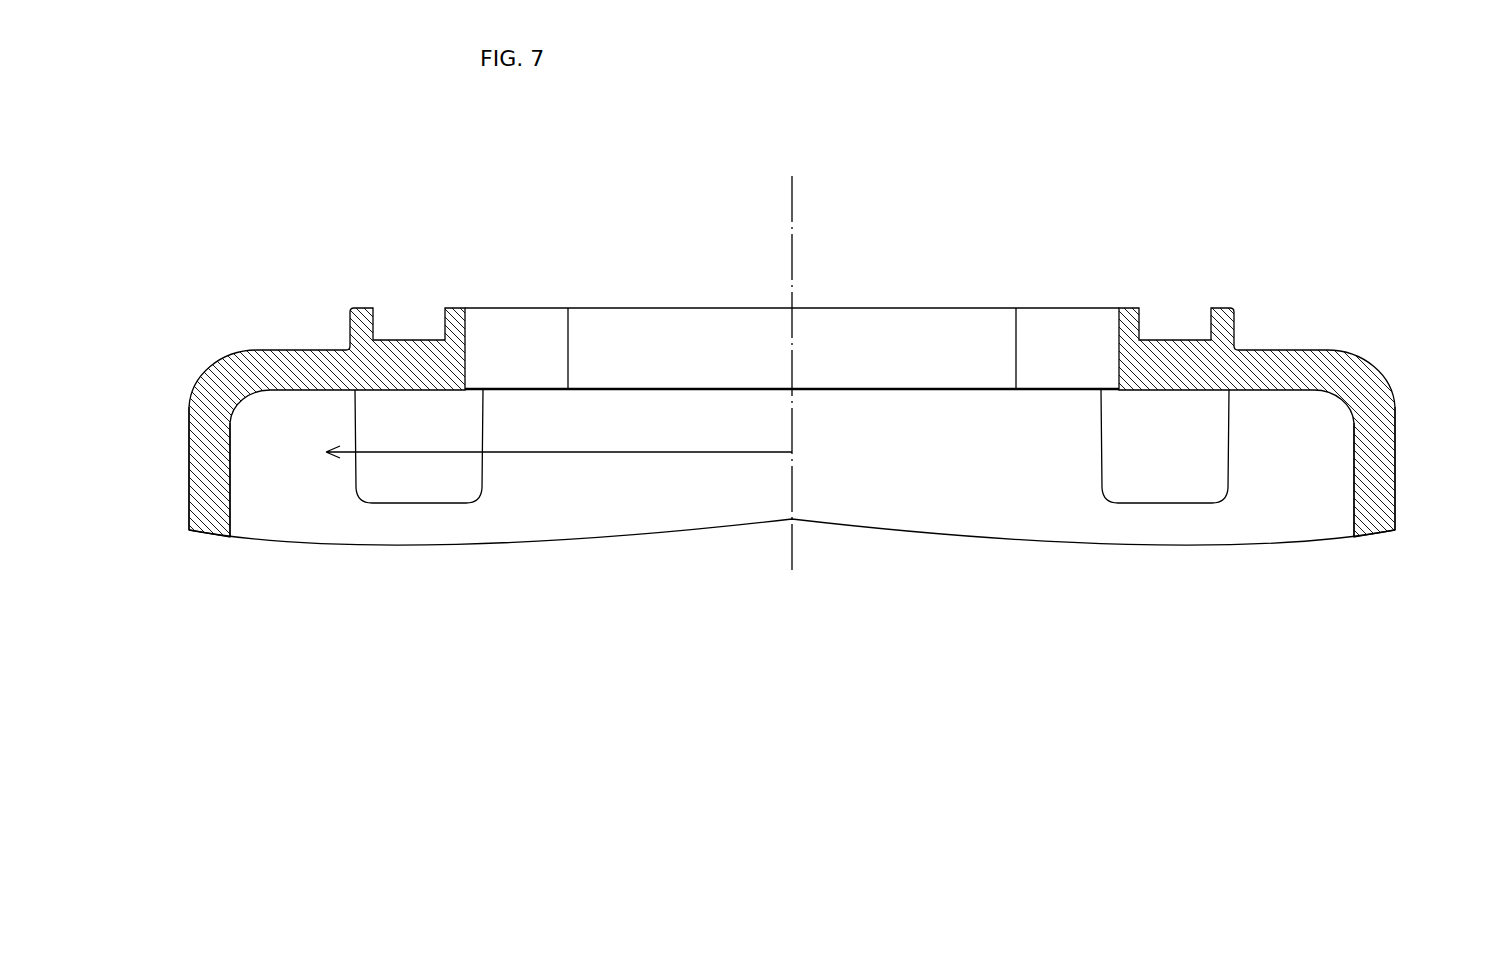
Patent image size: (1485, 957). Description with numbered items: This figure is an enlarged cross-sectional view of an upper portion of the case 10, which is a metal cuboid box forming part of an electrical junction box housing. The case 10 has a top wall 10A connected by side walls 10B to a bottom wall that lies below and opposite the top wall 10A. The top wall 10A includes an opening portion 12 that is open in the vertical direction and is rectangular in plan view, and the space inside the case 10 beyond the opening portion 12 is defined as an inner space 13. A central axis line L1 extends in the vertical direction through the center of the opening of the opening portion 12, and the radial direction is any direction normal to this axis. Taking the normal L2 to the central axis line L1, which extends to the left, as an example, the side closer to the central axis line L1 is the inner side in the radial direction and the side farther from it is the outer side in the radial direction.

The case 10 is at (991, 180).
The top wall 10A is at (313, 371).
The side walls 10B is at (210, 481).
The opening portion 12 is at (465, 362).
The inner space 13 is at (994, 496).
The central axis line L1 is at (792, 358).
The normal L2 is at (559, 438).